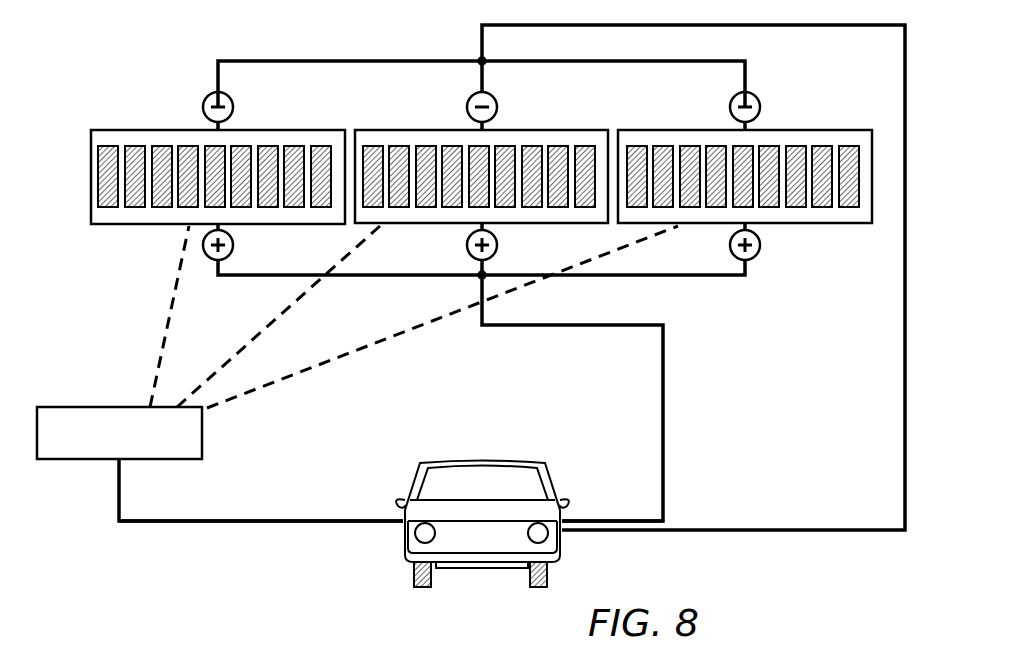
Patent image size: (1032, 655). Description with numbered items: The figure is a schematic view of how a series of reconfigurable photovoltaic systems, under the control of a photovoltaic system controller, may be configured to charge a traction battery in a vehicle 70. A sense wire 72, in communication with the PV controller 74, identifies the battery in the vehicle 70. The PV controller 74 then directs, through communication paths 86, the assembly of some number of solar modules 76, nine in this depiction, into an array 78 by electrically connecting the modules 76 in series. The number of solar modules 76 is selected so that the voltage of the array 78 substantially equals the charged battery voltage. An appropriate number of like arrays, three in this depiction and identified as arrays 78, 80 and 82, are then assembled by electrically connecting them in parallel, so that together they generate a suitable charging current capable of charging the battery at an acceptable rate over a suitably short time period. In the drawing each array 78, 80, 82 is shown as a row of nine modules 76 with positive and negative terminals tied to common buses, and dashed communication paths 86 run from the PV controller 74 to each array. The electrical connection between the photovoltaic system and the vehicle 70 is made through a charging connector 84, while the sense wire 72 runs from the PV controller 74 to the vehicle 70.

The vehicle 70 is at (480, 562).
The sense wire 72 is at (308, 523).
The PV controller 74 is at (132, 445).
The solar modules 76 is at (137, 203).
The array 78 is at (152, 137).
The array 80 is at (417, 138).
The array 82 is at (678, 137).
The charging connector 84 is at (565, 521).
The communication paths 86 is at (163, 348).